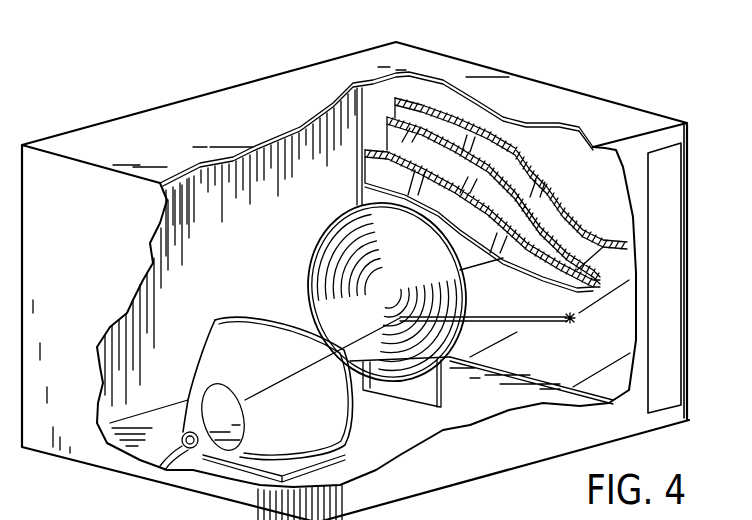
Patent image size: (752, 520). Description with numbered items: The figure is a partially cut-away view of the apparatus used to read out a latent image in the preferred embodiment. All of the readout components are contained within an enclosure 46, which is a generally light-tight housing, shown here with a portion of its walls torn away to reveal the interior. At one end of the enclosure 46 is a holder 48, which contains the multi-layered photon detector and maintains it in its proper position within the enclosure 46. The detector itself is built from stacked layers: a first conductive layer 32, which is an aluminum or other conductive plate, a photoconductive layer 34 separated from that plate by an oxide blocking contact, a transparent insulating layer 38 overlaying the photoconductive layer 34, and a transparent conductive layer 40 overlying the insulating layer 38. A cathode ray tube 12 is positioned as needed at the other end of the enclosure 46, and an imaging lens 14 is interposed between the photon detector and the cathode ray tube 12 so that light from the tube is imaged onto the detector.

The cathode ray tube 12 is at (225, 342).
The imaging lens 14 is at (333, 304).
The first conductive layer 32 is at (447, 130).
The photoconductive layer 34 is at (492, 150).
The transparent insulating layer 38 is at (495, 207).
The transparent conductive layer 40 is at (572, 364).
The enclosure 46 is at (163, 120).
The holder 48 is at (671, 289).